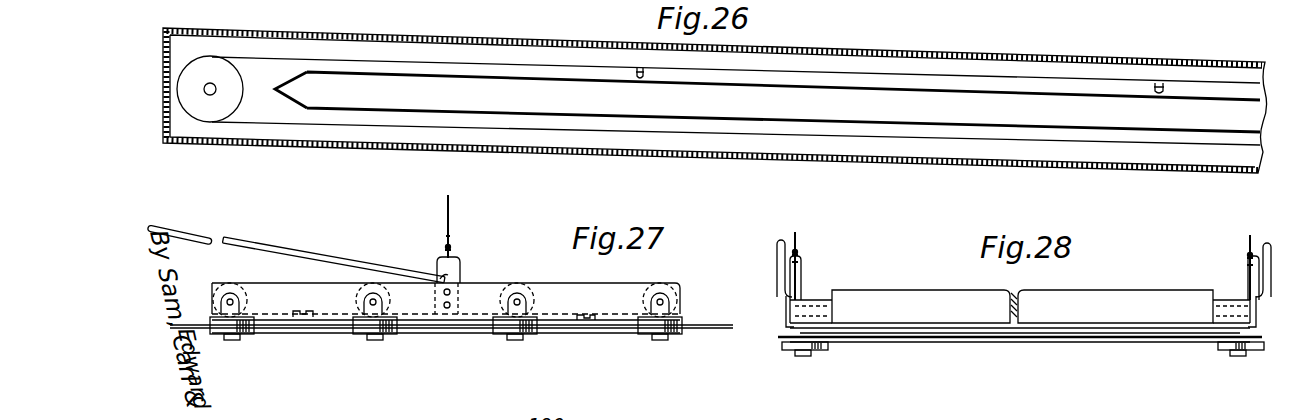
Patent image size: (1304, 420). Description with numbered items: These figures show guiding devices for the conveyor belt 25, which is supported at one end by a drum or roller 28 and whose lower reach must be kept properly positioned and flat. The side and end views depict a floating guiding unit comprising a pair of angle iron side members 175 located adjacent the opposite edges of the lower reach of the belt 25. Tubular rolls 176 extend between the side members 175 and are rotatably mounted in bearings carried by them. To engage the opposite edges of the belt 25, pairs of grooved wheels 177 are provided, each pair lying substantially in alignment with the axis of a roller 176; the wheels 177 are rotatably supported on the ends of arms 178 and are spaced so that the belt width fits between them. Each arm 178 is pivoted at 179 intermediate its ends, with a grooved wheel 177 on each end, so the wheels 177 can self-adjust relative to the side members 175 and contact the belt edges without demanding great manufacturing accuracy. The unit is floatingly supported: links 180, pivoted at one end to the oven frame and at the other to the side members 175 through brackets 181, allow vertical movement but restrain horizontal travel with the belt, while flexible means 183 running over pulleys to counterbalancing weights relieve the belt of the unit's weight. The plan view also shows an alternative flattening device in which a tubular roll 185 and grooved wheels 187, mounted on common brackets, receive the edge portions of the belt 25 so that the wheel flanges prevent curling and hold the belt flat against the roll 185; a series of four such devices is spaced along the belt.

In FIG. 26, the conveyor belt 25 is at (966, 78).
In FIG. 27, the conveyor belt 25 is at (720, 337).
In FIG. 28, the conveyor belt 25 is at (886, 341).
In FIG. 26, the drum or roller 28 is at (243, 79).
In FIG. 27, the angle iron side members 175 is at (607, 295).
In FIG. 28, the angle iron side members 175 is at (786, 300).
In FIG. 27, the tubular rolls 176 is at (213, 296).
In FIG. 28, the tubular rolls 176 is at (938, 292).
In FIG. 27, the grooved wheels 177 is at (250, 334).
In FIG. 28, the grooved wheels 177 is at (784, 350).
In FIG. 27, the arms 178 is at (330, 318).
In FIG. 28, the arms 178 is at (790, 330).
In FIG. 27, the pivot 179 is at (303, 325).
In FIG. 27, the links 180 is at (269, 246).
In FIG. 28, the links 180 is at (777, 247).
In FIG. 27, the brackets 181 is at (456, 258).
In FIG. 28, the brackets 181 is at (800, 292).
In FIG. 27, the flexible means 183 is at (452, 216).
In FIG. 28, the flexible means 183 is at (798, 240).
In FIG. 26, the tubular roll 185 is at (640, 78).
In FIG. 26, the grooved wheels 187 is at (641, 68).